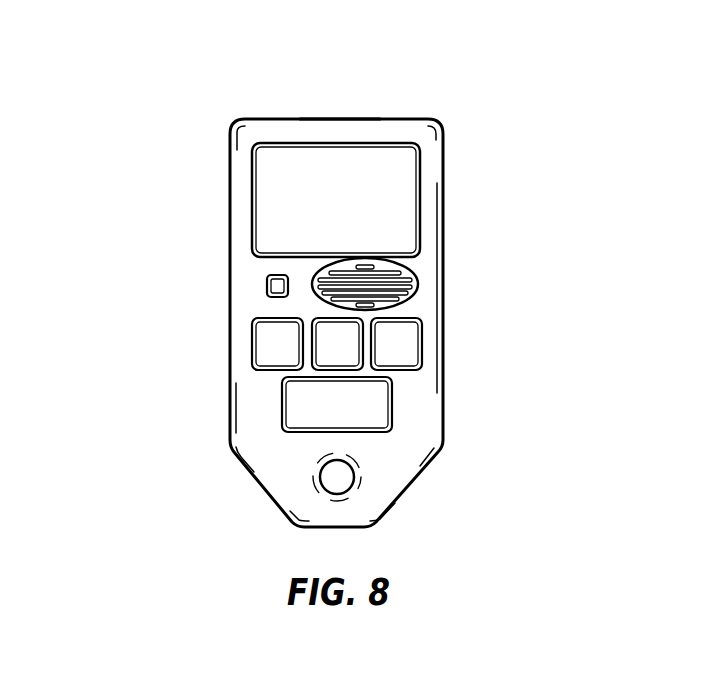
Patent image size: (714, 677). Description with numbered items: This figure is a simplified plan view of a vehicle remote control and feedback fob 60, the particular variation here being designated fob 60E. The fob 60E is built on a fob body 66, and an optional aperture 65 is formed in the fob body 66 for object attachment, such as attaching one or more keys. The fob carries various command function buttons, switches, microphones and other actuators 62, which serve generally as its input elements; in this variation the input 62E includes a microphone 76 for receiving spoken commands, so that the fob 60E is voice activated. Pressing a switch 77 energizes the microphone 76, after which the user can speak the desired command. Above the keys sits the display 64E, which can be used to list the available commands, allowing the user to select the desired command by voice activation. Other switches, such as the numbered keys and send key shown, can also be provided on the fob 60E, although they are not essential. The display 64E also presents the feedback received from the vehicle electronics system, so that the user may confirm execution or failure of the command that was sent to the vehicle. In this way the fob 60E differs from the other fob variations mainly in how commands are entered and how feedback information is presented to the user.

The fob 60 is at (512, 402).
The fob of FIG. 8 60E is at (511, 180).
The actuators 62 is at (232, 349).
The input 62E is at (221, 258).
The display 64E is at (250, 175).
The aperture 65 is at (355, 477).
The fob body 66 is at (340, 118).
The microphone 76 is at (421, 283).
The switch 77 is at (267, 285).